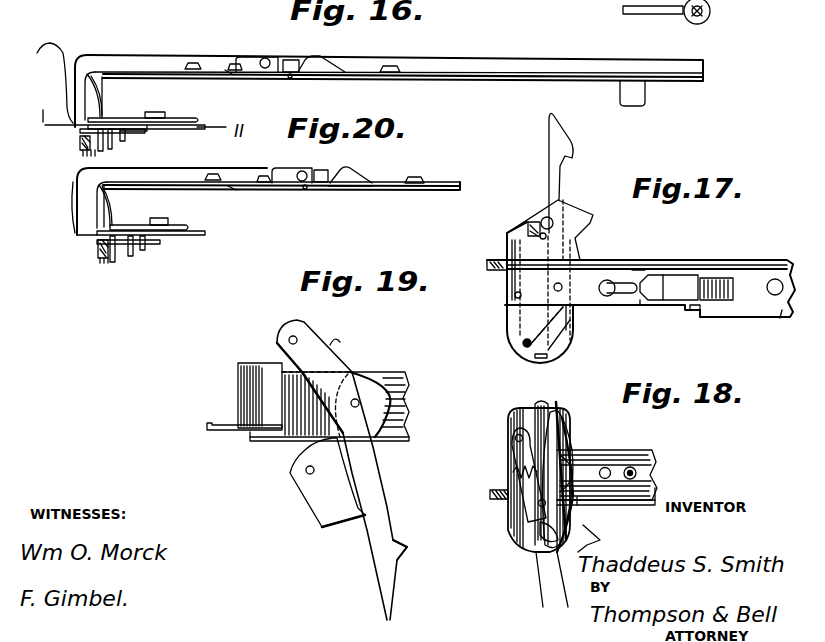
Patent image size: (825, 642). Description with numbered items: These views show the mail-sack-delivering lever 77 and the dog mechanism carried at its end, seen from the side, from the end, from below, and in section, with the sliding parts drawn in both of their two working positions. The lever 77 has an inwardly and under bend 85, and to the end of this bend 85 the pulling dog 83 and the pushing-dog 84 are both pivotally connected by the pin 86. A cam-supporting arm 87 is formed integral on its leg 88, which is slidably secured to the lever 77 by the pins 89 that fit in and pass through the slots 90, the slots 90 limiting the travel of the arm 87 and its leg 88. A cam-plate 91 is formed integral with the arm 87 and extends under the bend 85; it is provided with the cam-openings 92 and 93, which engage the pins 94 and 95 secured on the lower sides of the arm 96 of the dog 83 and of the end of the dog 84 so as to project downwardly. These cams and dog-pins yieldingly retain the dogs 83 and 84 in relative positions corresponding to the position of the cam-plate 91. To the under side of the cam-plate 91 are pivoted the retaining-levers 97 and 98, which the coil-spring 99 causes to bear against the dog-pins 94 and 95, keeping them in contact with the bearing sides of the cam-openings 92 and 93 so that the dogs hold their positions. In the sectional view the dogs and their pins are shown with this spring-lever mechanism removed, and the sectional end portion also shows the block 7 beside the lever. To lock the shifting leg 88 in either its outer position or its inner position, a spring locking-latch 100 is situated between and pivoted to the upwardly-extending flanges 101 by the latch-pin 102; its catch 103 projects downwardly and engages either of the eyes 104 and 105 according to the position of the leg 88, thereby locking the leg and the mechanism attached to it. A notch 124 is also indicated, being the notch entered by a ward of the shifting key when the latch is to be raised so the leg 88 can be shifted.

In FIG. 19, the frame block 7 is at (268, 372).
In FIG. 16, the mail-sack-delivering lever 77 is at (527, 61).
In FIG. 20, the mail-sack-delivering lever 77 is at (445, 190).
In FIG. 19, the mail-sack-delivering lever 77 is at (412, 382).
In FIG. 17, the mail-sack-delivering lever 77 is at (752, 318).
In FIG. 18, the mail-sack-delivering lever 77 is at (653, 470).
In FIG. 16, the pulling dog 83 is at (190, 128).
In FIG. 20, the pulling dog 83 is at (163, 238).
In FIG. 19, the pulling dog 83 is at (410, 549).
In FIG. 17, the pulling dog 83 is at (572, 155).
In FIG. 18, the pulling dog 83 is at (541, 605).
In FIG. 16, the pushing-dog 84 is at (160, 116).
In FIG. 20, the pushing-dog 84 is at (162, 226).
In FIG. 19, the pushing-dog 84 is at (328, 528).
In FIG. 17, the pushing-dog 84 is at (563, 206).
In FIG. 18, the pushing-dog 84 is at (585, 546).
In FIG. 16, the inwardly and under bend 85 is at (140, 121).
In FIG. 20, the inwardly and under bend 85 is at (163, 230).
In FIG. 19, the inwardly and under bend 85 is at (395, 382).
In FIG. 18, the inwardly and under bend 85 is at (600, 472).
In FIG. 19, the pin 86 is at (360, 404).
In FIG. 16, the cam-supporting arm 87 is at (70, 60).
In FIG. 20, the cam-supporting arm 87 is at (85, 198).
In FIG. 19, the cam-supporting arm 87 is at (240, 397).
In FIG. 17, the cam-supporting arm 87 is at (540, 292).
In FIG. 18, the cam-supporting arm 87 is at (510, 505).
In FIG. 16, the leg 88 is at (165, 66).
In FIG. 20, the leg 88 is at (230, 180).
In FIG. 19, the leg 88 is at (358, 372).
In FIG. 17, the leg 88 is at (748, 282).
In FIG. 16, the pins 89 is at (195, 66).
In FIG. 20, the pins 89 is at (214, 177).
In FIG. 17, the pins 89 is at (608, 280).
In FIG. 17, the slots 90 is at (637, 268).
In FIG. 16, the cam-plate 91 is at (125, 135).
In FIG. 20, the cam-plate 91 is at (148, 255).
In FIG. 17, the cam-plate 91 is at (570, 323).
In FIG. 18, the cam-plate 91 is at (568, 443).
In FIG. 18, the cam-opening 92 is at (556, 402).
In FIG. 18, the cam-opening 93 is at (540, 530).
In FIG. 16, the pin 94 is at (100, 152).
In FIG. 20, the pin 94 is at (113, 262).
In FIG. 19, the pin 94 is at (290, 338).
In FIG. 17, the pin 94 is at (523, 348).
In FIG. 18, the pin 94 is at (530, 415).
In FIG. 16, the pin 95 is at (135, 129).
In FIG. 20, the pin 95 is at (120, 262).
In FIG. 19, the pin 95 is at (306, 472).
In FIG. 17, the pin 95 is at (540, 234).
In FIG. 18, the pin 95 is at (565, 535).
In FIG. 16, the arm 96 is at (75, 125).
In FIG. 20, the arm 96 is at (95, 234).
In FIG. 19, the arm 96 is at (343, 343).
In FIG. 17, the arm 96 is at (538, 317).
In FIG. 18, the arm 96 is at (553, 420).
In FIG. 16, the retaining-lever 97 is at (80, 144).
In FIG. 20, the retaining-lever 97 is at (100, 253).
In FIG. 17, the retaining-lever 97 is at (532, 222).
In FIG. 18, the retaining-lever 97 is at (523, 492).
In FIG. 16, the retaining-lever 98 is at (109, 141).
In FIG. 20, the retaining-lever 98 is at (130, 258).
In FIG. 17, the retaining-lever 98 is at (560, 323).
In FIG. 18, the retaining-lever 98 is at (538, 412).
In FIG. 16, the coil-spring 99 is at (85, 152).
In FIG. 20, the coil-spring 99 is at (105, 262).
In FIG. 18, the coil-spring 99 is at (520, 467).
In FIG. 16, the spring locking-latch 100 is at (296, 60).
In FIG. 20, the spring locking-latch 100 is at (322, 173).
In FIG. 17, the spring locking-latch 100 is at (718, 280).
In FIG. 16, the upwardly-extending flanges 101 is at (291, 66).
In FIG. 20, the upwardly-extending flanges 101 is at (298, 186).
In FIG. 17, the upwardly-extending flanges 101 is at (690, 275).
In FIG. 16, the latch-pin 102 is at (263, 58).
In FIG. 20, the latch-pin 102 is at (310, 186).
In FIG. 17, the latch-pin 102 is at (655, 282).
In FIG. 16, the catch 103 is at (232, 74).
In FIG. 20, the catch 103 is at (240, 190).
In FIG. 17, the catch 103 is at (648, 303).
In FIG. 18, the catch 103 is at (655, 490).
In FIG. 18, the eye 104 is at (640, 470).
In FIG. 18, the eye 105 is at (652, 462).
In FIG. 16, the notch 124 is at (290, 78).
In FIG. 20, the notch 124 is at (285, 215).